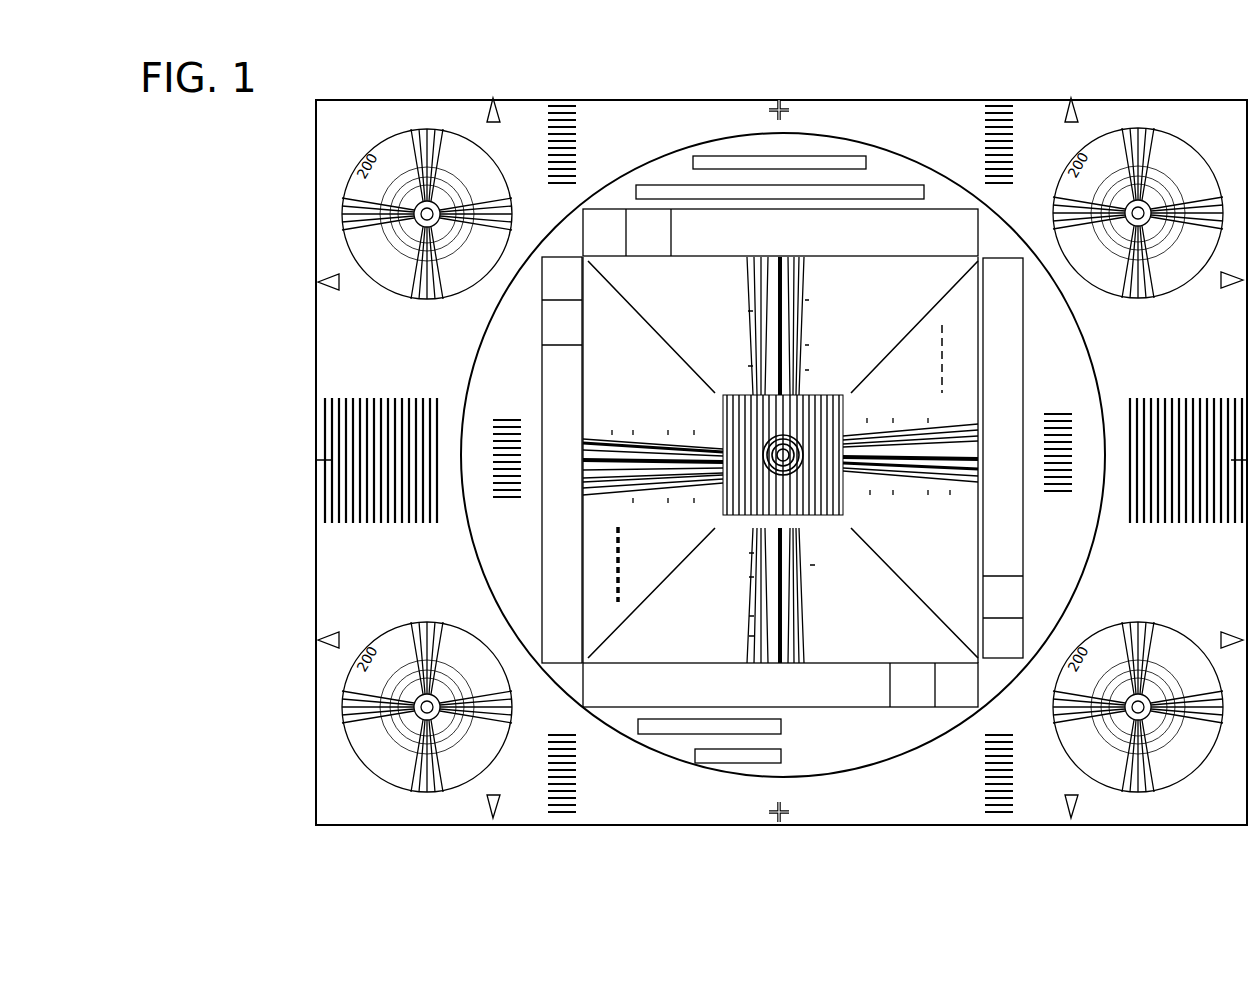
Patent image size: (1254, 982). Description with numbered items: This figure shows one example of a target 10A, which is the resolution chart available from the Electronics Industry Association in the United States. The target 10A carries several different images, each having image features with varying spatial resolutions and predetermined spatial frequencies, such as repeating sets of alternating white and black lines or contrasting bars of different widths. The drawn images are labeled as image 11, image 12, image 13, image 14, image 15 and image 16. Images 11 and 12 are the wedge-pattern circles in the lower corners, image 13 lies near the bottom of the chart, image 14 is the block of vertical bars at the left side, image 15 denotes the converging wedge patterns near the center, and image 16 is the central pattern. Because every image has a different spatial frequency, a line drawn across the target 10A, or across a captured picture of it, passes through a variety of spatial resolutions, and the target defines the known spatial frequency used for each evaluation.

The target 10A is at (986, 75).
The image 11 is at (388, 764).
The image 12 is at (1065, 766).
The image 13 is at (605, 780).
The image 14 is at (325, 450).
The image 15 is at (760, 331).
The image 16 is at (812, 492).